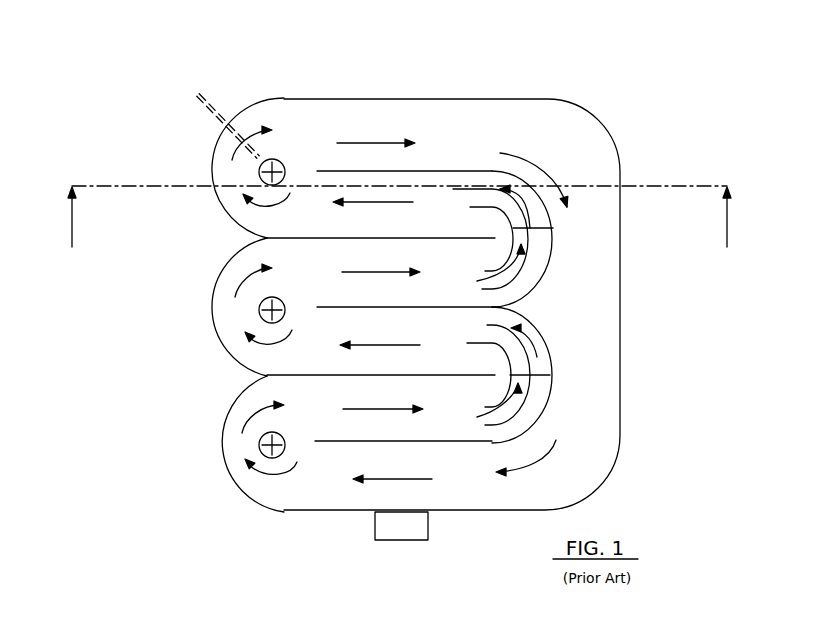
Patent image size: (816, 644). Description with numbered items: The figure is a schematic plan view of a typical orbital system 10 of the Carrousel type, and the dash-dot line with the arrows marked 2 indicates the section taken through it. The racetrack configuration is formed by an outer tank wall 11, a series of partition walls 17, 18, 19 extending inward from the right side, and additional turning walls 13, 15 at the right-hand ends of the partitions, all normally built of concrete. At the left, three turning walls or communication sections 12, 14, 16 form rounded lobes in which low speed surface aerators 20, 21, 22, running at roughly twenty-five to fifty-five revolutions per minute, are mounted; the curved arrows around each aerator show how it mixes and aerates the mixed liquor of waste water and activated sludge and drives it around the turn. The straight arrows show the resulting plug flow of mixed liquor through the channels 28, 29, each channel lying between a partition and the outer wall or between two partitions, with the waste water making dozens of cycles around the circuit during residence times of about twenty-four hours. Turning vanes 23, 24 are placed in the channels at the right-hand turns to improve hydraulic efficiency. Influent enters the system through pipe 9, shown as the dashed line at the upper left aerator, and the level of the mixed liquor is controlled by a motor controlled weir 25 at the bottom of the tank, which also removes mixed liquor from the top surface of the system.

The section line 2- 2 is at (397, 216).
The pipe 9 is at (219, 105).
The orbital system 10 is at (389, 315).
The outer tank wall 11 is at (547, 99).
The turning wall 12 is at (222, 212).
The additional turning wall 13 is at (537, 285).
The turning wall 14 is at (210, 300).
The additional turning wall 15 is at (550, 376).
The turning wall 16 is at (212, 447).
The partition wall 17 is at (434, 171).
The partition wall 18 is at (330, 307).
The partition wall 19 is at (330, 442).
The surface aerator 20 is at (274, 159).
The surface aerator 21 is at (260, 314).
The surface aerator 22 is at (258, 444).
The turning vane 23 is at (553, 228).
The turning vane 24 is at (530, 267).
The motor controlled weir 25 is at (395, 541).
The channel 28 is at (450, 214).
The channel 29 is at (448, 403).